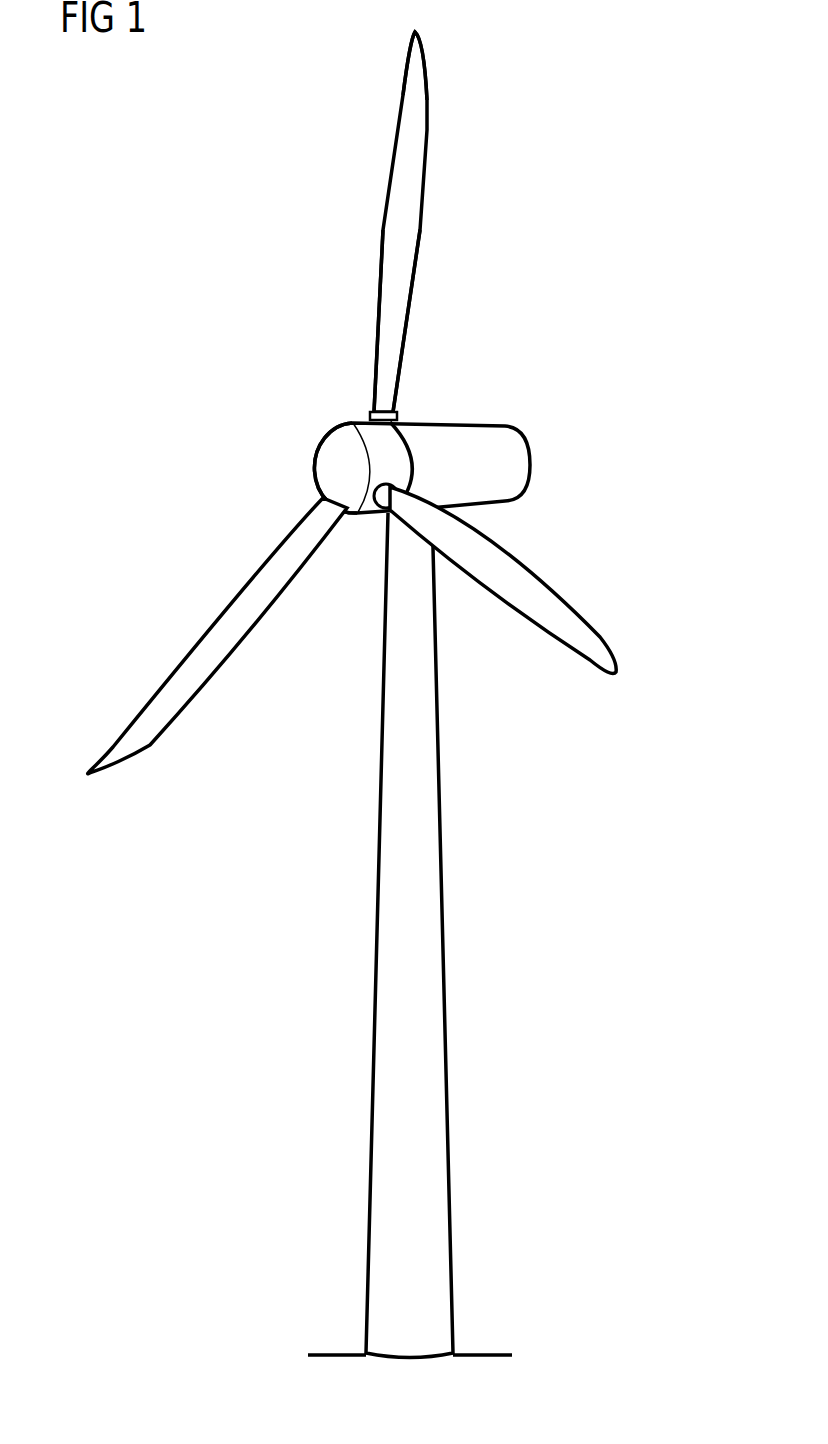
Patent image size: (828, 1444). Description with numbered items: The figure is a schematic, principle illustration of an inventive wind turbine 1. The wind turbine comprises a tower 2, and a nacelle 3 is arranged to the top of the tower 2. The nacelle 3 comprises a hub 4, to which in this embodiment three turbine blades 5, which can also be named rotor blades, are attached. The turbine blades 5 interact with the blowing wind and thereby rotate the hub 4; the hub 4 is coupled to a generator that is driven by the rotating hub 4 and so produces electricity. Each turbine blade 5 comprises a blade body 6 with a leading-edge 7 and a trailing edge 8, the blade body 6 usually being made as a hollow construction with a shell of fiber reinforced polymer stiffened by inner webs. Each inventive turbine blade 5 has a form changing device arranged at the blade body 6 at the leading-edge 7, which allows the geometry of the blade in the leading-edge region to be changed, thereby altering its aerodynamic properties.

The wind turbine 1 is at (640, 233).
The tower 2 is at (445, 963).
The nacelle 3 is at (517, 462).
The hub 4 is at (323, 463).
The turbine blade 5 is at (397, 217).
The blade body 6 is at (413, 148).
The leading-edge and trailing edge 7 is at (411, 302).
The leading edge 8 is at (380, 302).